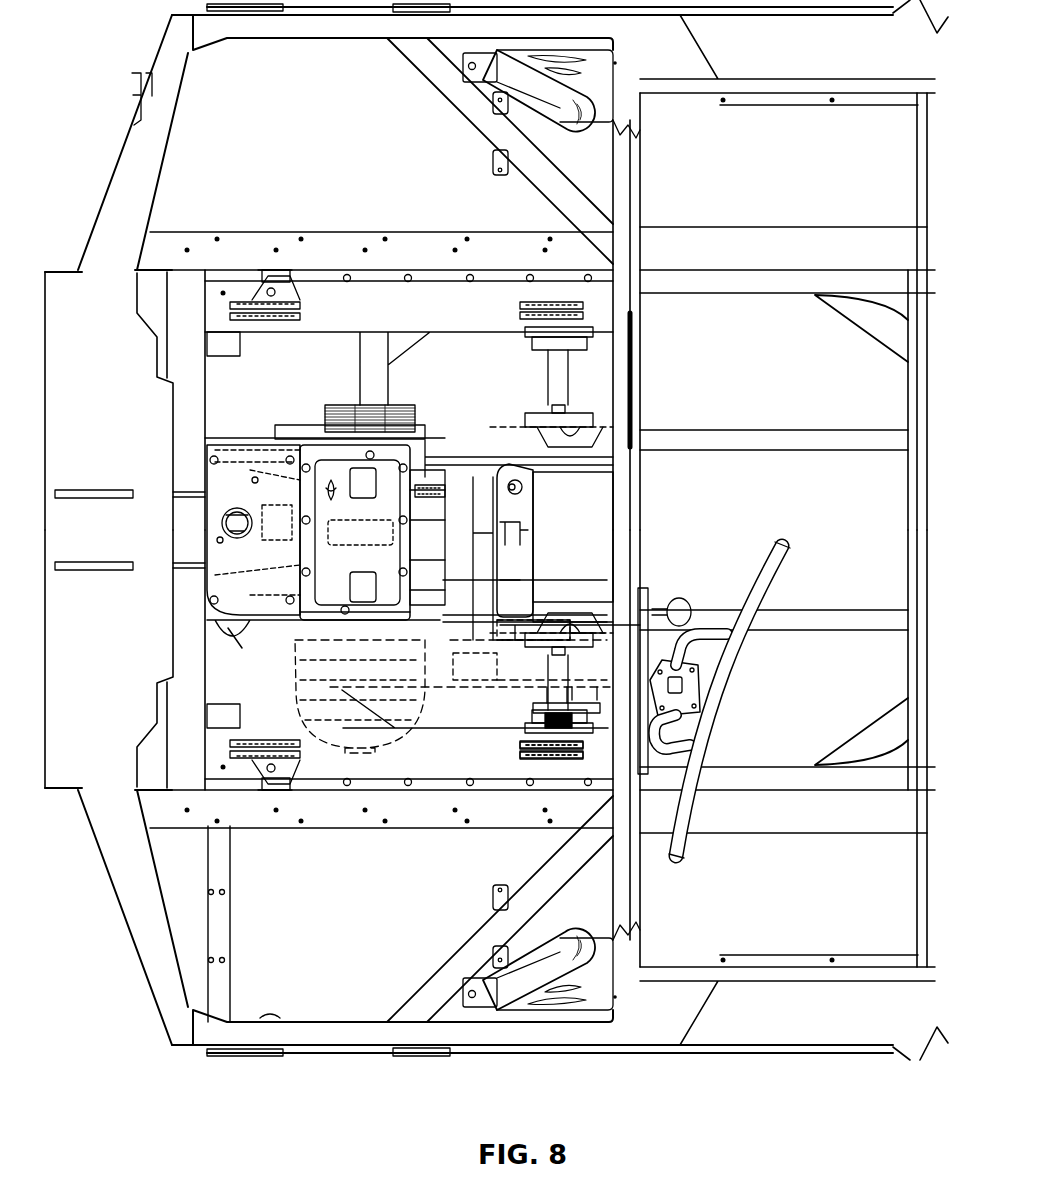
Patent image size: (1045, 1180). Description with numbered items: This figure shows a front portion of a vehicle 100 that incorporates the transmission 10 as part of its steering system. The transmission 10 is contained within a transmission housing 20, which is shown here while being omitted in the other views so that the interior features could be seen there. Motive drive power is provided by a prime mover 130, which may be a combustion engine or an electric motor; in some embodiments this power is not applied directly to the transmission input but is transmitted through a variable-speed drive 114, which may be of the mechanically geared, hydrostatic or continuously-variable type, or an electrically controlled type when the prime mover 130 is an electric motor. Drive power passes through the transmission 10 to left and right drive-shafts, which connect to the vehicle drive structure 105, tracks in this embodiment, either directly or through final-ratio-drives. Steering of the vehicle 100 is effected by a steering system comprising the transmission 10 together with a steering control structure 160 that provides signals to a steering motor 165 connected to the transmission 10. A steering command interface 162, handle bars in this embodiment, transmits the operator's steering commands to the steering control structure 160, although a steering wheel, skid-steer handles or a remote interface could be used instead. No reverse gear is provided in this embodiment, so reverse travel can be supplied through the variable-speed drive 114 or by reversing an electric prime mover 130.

The vehicle 100 is at (103, 997).
The vehicle drive structure 105 is at (135, 88).
The prime mover 130 is at (296, 401).
The transmission housing 20 is at (503, 468).
The transmission 10 is at (596, 525).
The steering motor 165 is at (537, 623).
The steering control structure 160 is at (483, 673).
The variable-speed drive 114 is at (524, 680).
The steering command interface 162 is at (752, 597).